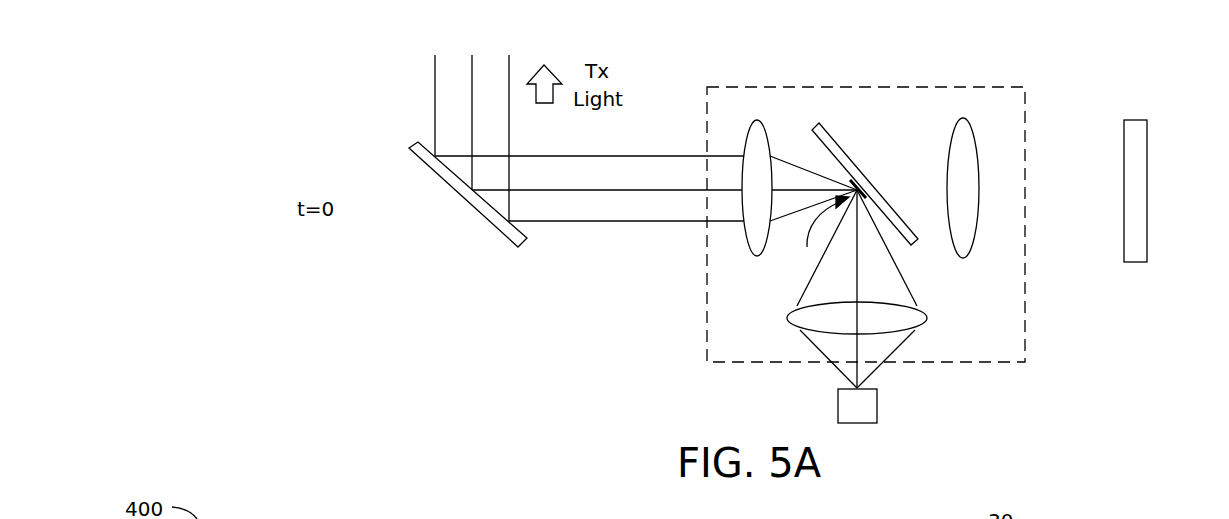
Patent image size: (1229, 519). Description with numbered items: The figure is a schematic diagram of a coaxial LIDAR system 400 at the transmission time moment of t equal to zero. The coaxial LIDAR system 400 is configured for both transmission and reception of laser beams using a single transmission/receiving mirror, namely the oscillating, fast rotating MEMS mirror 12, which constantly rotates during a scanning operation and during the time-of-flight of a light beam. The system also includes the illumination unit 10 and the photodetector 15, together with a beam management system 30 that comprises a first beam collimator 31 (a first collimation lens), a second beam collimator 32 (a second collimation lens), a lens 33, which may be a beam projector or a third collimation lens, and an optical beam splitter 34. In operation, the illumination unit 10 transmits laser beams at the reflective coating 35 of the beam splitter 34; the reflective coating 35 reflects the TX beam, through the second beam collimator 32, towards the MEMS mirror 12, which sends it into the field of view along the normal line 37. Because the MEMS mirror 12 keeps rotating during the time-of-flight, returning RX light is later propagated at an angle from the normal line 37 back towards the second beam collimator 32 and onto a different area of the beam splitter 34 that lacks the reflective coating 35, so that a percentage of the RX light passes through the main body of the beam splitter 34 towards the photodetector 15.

The coaxial LIDAR system 400 is at (203, 72).
The MEMS mirror 12 is at (502, 238).
The normal line 37 is at (592, 190).
The second beam collimator 32 is at (757, 120).
The beam splitter 34 is at (858, 170).
The reflective coating 35 is at (821, 236).
The lens 33 is at (963, 118).
The beam management system 30 is at (1010, 87).
The first beam collimator 31 is at (927, 318).
The illumination unit 10 is at (877, 408).
The photodetector 15 is at (1147, 193).